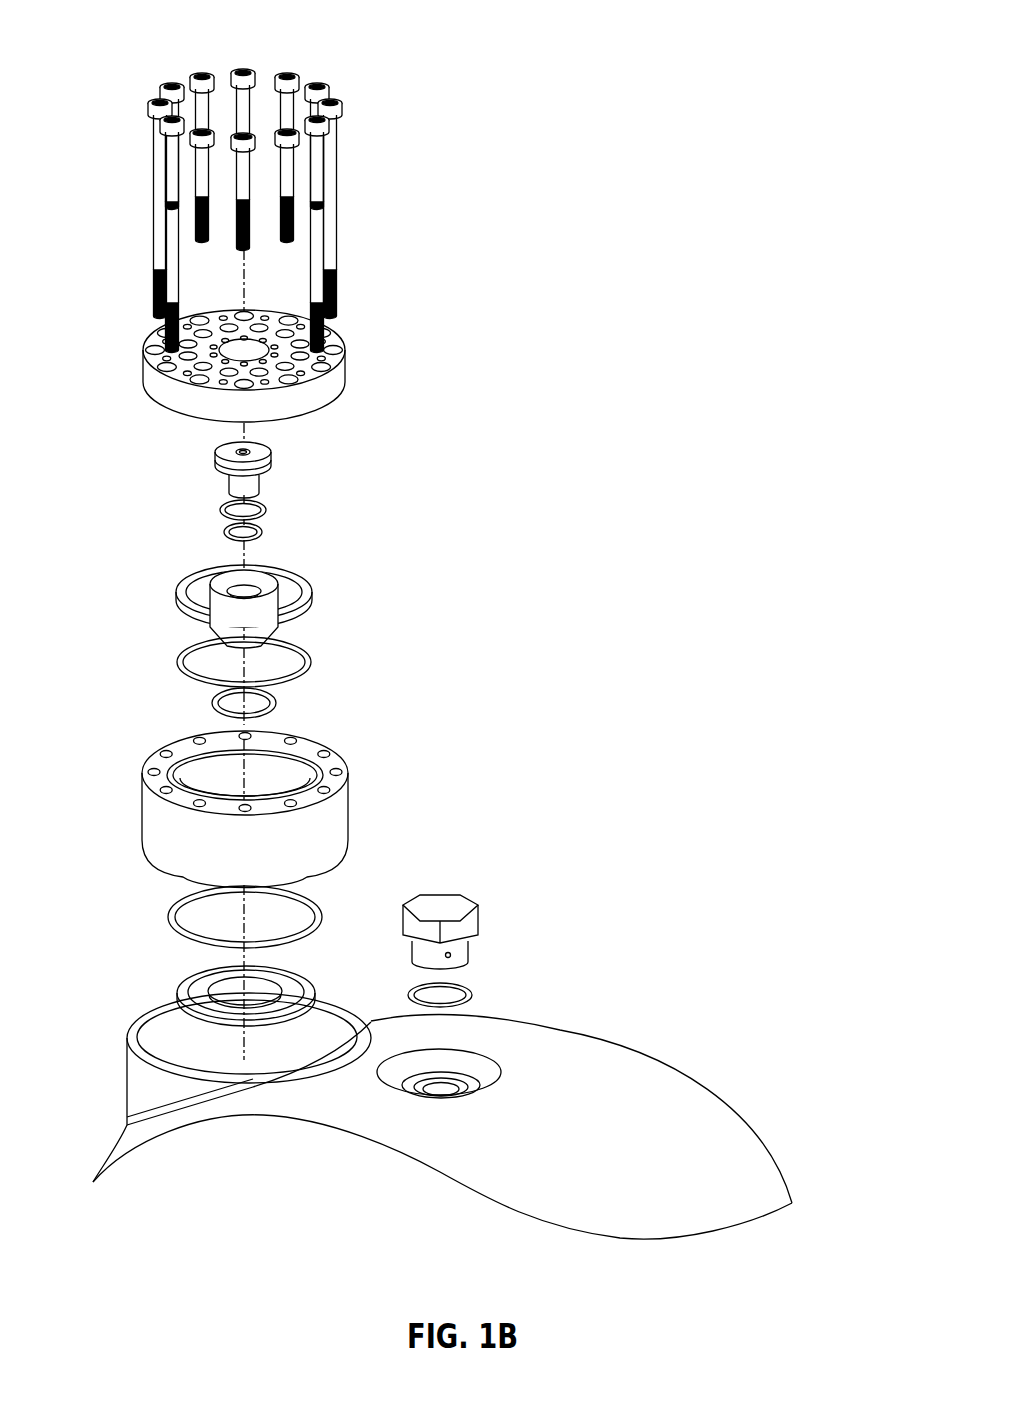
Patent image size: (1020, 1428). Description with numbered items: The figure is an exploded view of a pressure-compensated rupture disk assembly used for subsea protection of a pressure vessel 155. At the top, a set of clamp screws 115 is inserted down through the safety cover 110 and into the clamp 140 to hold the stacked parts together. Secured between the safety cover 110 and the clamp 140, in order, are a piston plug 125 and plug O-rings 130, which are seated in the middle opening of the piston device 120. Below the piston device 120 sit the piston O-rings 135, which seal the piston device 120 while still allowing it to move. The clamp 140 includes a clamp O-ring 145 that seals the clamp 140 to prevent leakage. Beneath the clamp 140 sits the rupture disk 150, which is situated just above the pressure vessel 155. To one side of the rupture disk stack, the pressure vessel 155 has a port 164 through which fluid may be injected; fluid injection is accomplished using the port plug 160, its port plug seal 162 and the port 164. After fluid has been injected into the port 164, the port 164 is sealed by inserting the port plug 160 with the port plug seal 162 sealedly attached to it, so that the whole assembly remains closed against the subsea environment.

The clamp screws 115 is at (262, 40).
The safety cover 110 is at (347, 366).
The piston plug 125 is at (271, 463).
The plug O-rings 130 is at (268, 511).
The piston device 120 is at (312, 598).
The piston O-rings 135 is at (313, 660).
The clamp 140 is at (350, 808).
The clamp O-ring 145 is at (170, 913).
The rupture disk 150 is at (180, 980).
The pressure vessel 155 is at (585, 1025).
The port plug 160 is at (478, 915).
The port plug seal 162 is at (465, 985).
The port 164 is at (445, 1088).